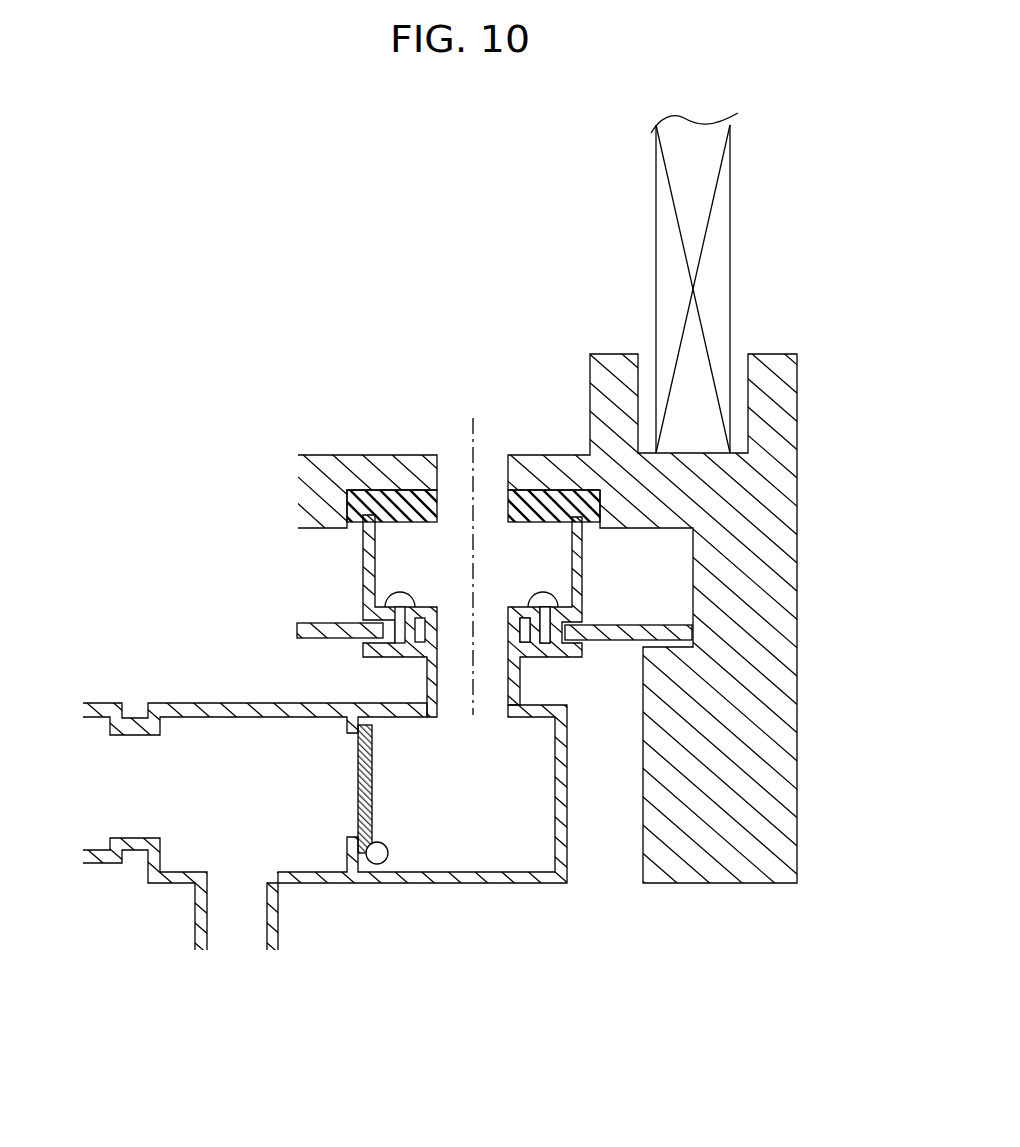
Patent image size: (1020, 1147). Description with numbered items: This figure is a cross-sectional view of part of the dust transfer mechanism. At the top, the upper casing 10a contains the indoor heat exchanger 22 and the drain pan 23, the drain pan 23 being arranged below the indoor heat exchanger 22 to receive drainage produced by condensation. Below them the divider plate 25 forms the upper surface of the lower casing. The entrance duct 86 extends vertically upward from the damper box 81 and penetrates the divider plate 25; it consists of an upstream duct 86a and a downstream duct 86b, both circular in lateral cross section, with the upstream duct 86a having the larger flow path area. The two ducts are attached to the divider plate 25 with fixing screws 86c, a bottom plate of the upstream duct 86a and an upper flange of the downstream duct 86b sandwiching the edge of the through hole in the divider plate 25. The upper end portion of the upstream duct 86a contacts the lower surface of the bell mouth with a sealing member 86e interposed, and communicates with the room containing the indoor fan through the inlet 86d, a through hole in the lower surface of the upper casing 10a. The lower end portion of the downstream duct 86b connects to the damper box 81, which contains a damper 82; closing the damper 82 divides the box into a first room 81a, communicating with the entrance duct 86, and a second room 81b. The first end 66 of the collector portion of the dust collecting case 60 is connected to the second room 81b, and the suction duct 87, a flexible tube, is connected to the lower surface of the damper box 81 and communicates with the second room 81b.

The indoor heat exchanger 22 is at (734, 182).
The drain pan 23 is at (797, 385).
The upper casing 10a is at (323, 467).
The sealing member 86e is at (392, 503).
The inlet 86d is at (455, 467).
The upstream duct 86a is at (370, 550).
The entrance duct 86 is at (588, 545).
The fixing screws 86c is at (543, 600).
The downstream duct 86b is at (522, 682).
The divider plate 25 is at (315, 628).
The dust collecting case 60 is at (95, 700).
The first end 66 is at (140, 705).
The damper 82 is at (373, 772).
The damper box 81 is at (569, 748).
The second room 81b is at (322, 840).
The first room 81a is at (488, 840).
The suction duct 87 is at (196, 917).